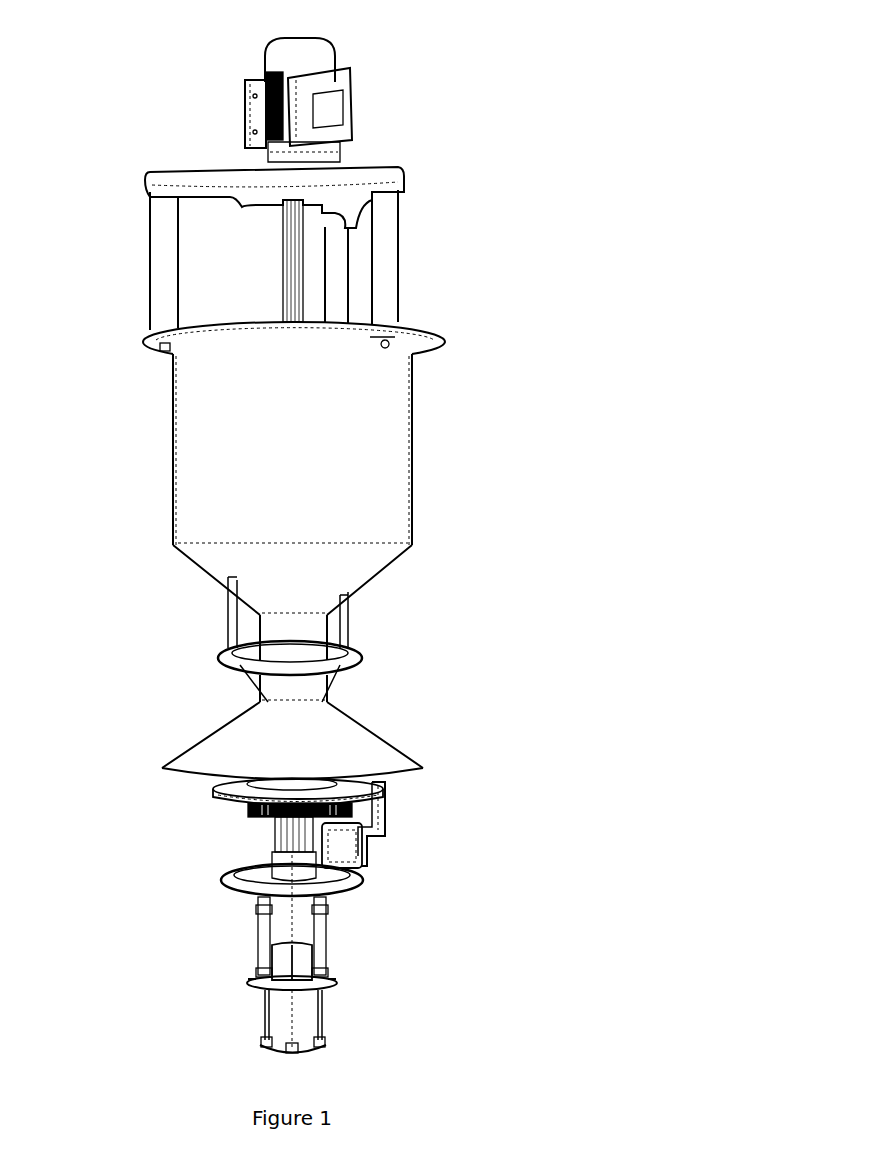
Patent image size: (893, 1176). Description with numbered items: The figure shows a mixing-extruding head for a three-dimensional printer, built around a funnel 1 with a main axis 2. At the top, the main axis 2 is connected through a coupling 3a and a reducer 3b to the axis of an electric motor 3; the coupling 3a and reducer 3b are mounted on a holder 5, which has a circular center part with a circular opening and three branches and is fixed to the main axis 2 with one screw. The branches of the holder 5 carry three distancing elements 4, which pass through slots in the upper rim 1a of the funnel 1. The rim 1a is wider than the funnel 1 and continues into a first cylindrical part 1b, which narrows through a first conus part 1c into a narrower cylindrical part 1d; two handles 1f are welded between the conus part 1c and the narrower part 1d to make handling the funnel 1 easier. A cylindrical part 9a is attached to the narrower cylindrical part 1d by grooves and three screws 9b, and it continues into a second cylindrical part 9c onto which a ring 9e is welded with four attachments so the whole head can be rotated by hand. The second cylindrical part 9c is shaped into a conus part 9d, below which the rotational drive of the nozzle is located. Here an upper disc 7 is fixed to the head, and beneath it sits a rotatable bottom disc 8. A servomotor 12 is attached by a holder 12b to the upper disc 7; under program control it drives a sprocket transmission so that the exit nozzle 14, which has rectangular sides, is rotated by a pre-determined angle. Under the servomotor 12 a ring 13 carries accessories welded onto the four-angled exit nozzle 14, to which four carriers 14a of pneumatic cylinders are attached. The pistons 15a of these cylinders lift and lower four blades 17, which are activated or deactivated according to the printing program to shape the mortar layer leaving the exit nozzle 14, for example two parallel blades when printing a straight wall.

The funnel 1 is at (425, 380).
The upper rim 1a is at (420, 338).
The first cylindrical part 1b is at (378, 438).
The first conus part 1c is at (363, 563).
The narrower cylindrical part 1d is at (278, 627).
The handles 1f is at (225, 595).
The main axis 2 is at (288, 273).
The electric motor 3 is at (315, 53).
The coupling 3a is at (245, 147).
The reducer 3b is at (332, 157).
The distancing elements 4 is at (155, 272).
The holder 5 is at (148, 182).
The upper disc 7 is at (372, 783).
The bottom disc 8 is at (212, 800).
The cylindrical part 9a is at (240, 660).
The screws 9b is at (235, 877).
The second cylindrical part 9c is at (283, 686).
The conus part 9d is at (368, 742).
The ring 9e is at (353, 663).
The servomotor 12 is at (340, 847).
The holder 12b is at (385, 825).
The ring 13 is at (360, 883).
The exit nozzle 14 is at (283, 925).
The carriers 14a is at (298, 960).
The pistons 15a is at (318, 955).
The blades 17 is at (307, 1023).